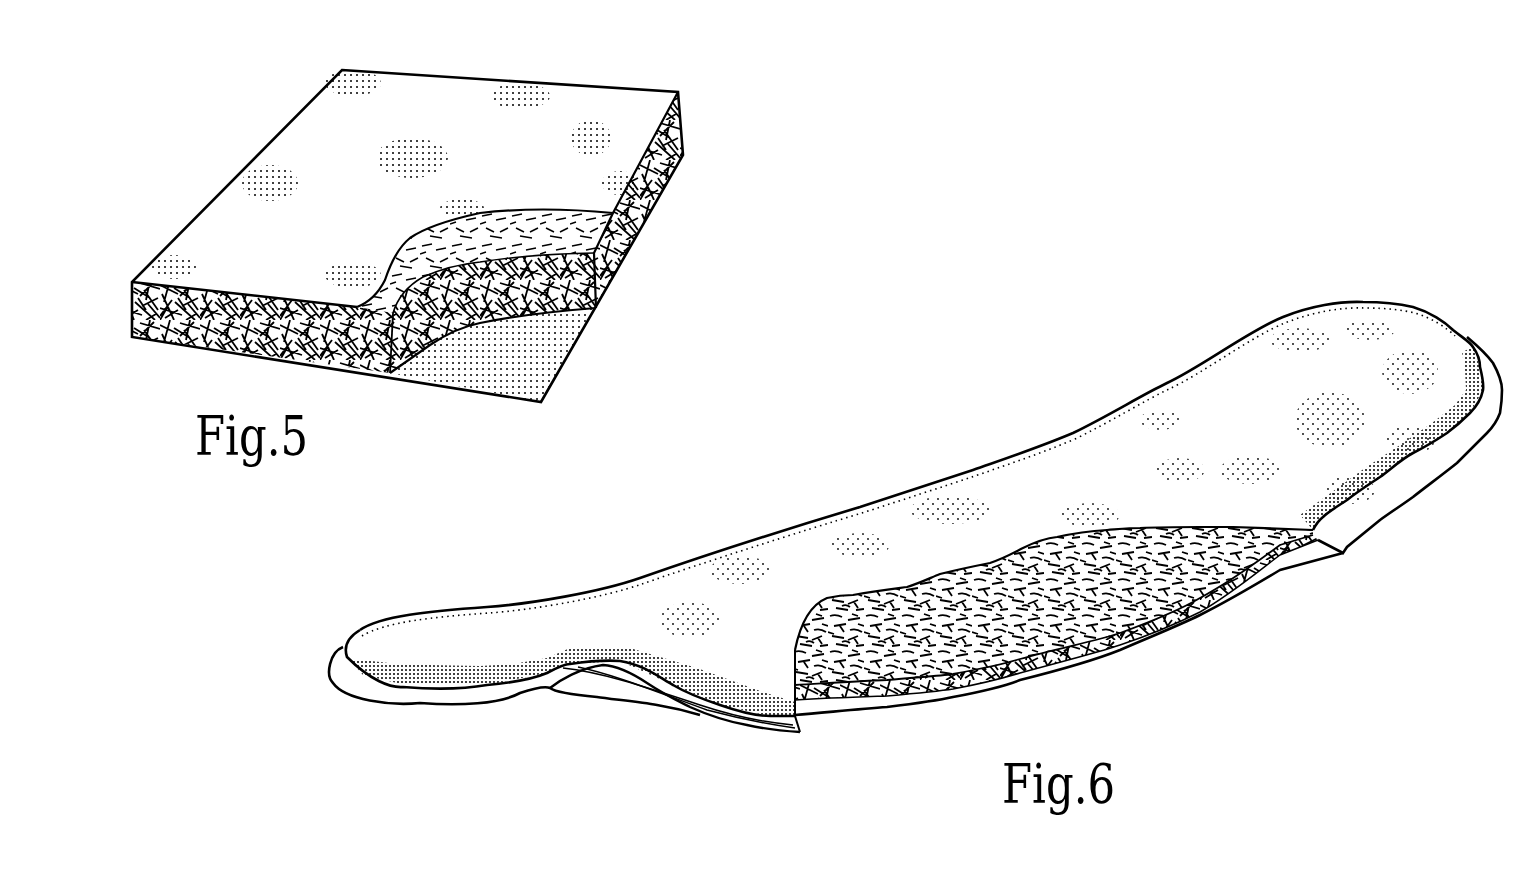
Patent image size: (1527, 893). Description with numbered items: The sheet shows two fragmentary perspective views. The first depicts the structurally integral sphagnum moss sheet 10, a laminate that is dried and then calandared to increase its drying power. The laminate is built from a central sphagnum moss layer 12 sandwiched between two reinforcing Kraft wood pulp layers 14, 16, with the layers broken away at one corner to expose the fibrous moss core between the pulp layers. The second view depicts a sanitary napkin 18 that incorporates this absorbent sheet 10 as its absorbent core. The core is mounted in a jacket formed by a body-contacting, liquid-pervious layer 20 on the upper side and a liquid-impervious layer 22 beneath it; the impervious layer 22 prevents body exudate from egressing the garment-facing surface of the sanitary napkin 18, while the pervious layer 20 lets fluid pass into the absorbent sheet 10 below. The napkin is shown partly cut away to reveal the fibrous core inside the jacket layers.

In FIG. 5, the structurally integral absorbent sheet 10 is at (200, 182).
In FIG. 6, the structurally integral absorbent sheet 10 is at (913, 600).
In FIG. 5, the sphagnum moss layer 12 is at (670, 177).
In FIG. 5, the reinforcing Kraft wood pulp layer 14 is at (599, 98).
In FIG. 5, the reinforcing Kraft wood pulp layer 16 is at (557, 367).
In FIG. 6, the sanitary napkin 18 is at (985, 433).
In FIG. 6, the body-contacting, liquid-pervious layer 20 is at (478, 633).
In FIG. 6, the liquid-impervious layer 22 is at (550, 690).